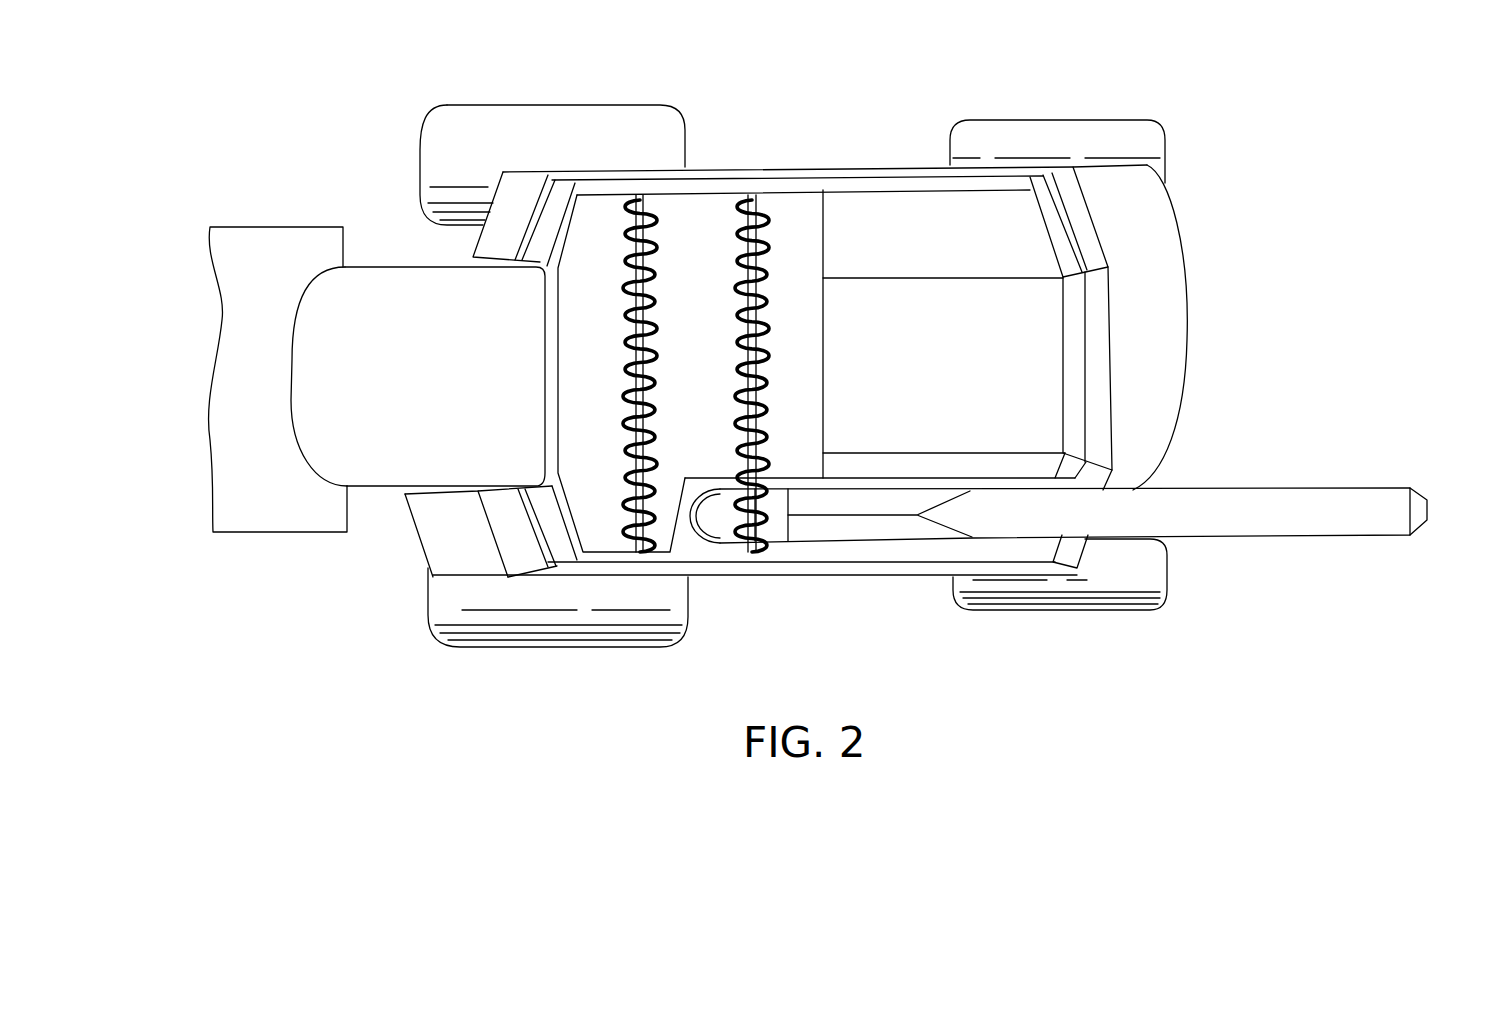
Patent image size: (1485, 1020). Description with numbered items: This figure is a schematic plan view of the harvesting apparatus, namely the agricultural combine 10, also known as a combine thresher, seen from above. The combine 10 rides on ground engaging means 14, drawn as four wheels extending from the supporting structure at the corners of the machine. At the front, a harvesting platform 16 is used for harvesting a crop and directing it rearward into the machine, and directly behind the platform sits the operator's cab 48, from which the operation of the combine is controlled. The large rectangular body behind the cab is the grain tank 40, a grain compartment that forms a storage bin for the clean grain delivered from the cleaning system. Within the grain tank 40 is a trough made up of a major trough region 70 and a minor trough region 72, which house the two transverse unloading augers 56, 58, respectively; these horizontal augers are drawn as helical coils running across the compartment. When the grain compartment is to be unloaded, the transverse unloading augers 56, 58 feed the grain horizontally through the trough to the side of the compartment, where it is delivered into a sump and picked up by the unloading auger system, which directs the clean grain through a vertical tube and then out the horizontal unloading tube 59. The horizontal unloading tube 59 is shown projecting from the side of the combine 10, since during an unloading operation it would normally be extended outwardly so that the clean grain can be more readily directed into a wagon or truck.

The agricultural combine 10 is at (1018, 48).
The ground engaging means 14 is at (512, 104).
The harvesting platform 16 is at (222, 362).
The grain tank 40 is at (830, 358).
The operator's cab 48 is at (382, 470).
The transverse unloading auger 56 is at (657, 240).
The transverse unloading auger 58 is at (763, 240).
The horizontal unloading tube 59 is at (1250, 537).
The major trough region 70 is at (606, 362).
The minor trough region 72 is at (809, 337).